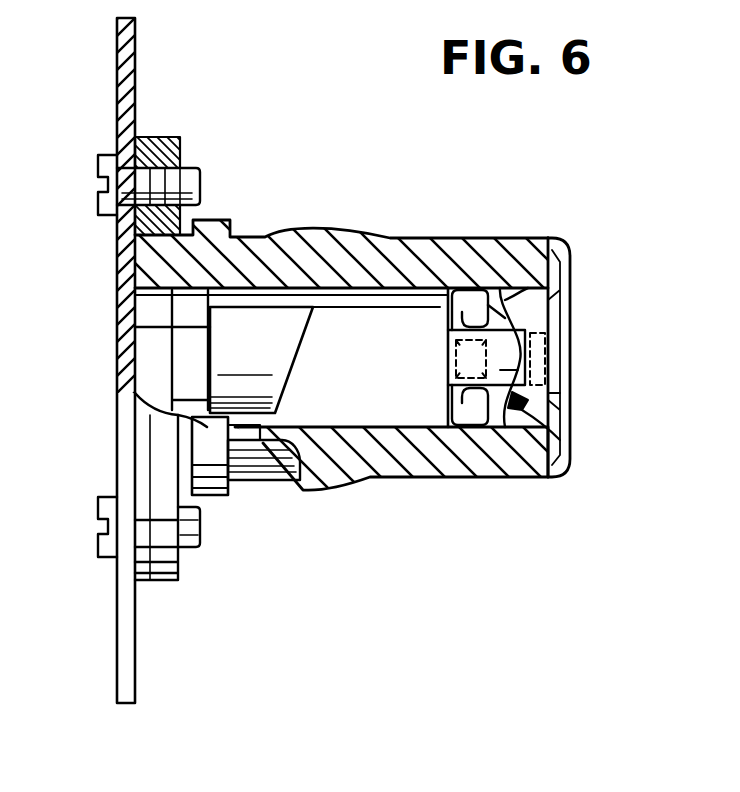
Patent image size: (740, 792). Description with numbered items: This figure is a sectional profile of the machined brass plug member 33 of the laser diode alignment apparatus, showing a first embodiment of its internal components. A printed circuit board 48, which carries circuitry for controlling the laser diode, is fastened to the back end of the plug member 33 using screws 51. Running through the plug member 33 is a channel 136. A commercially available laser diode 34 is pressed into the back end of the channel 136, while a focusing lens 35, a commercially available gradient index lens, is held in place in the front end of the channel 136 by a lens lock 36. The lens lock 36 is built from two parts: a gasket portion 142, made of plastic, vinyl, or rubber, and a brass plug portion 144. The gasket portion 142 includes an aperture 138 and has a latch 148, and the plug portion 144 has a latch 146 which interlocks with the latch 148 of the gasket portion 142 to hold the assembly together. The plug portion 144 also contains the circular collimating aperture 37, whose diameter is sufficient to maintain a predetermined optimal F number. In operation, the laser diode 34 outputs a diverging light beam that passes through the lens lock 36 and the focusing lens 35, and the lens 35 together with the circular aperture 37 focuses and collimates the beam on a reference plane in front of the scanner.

The printed circuit board 48 is at (117, 62).
The screws 51 is at (98, 168).
The channel 136 is at (332, 317).
The laser diode 34 is at (238, 333).
The plug member 33 is at (217, 495).
The gasket portion 142 is at (468, 288).
The focusing lens 35 is at (502, 370).
The aperture 138 is at (452, 346).
The latch 148 is at (505, 307).
The plug portion 144 is at (520, 305).
The latch 146 is at (545, 356).
The lens lock 36 is at (550, 436).
The circular collimating aperture 37 is at (560, 393).